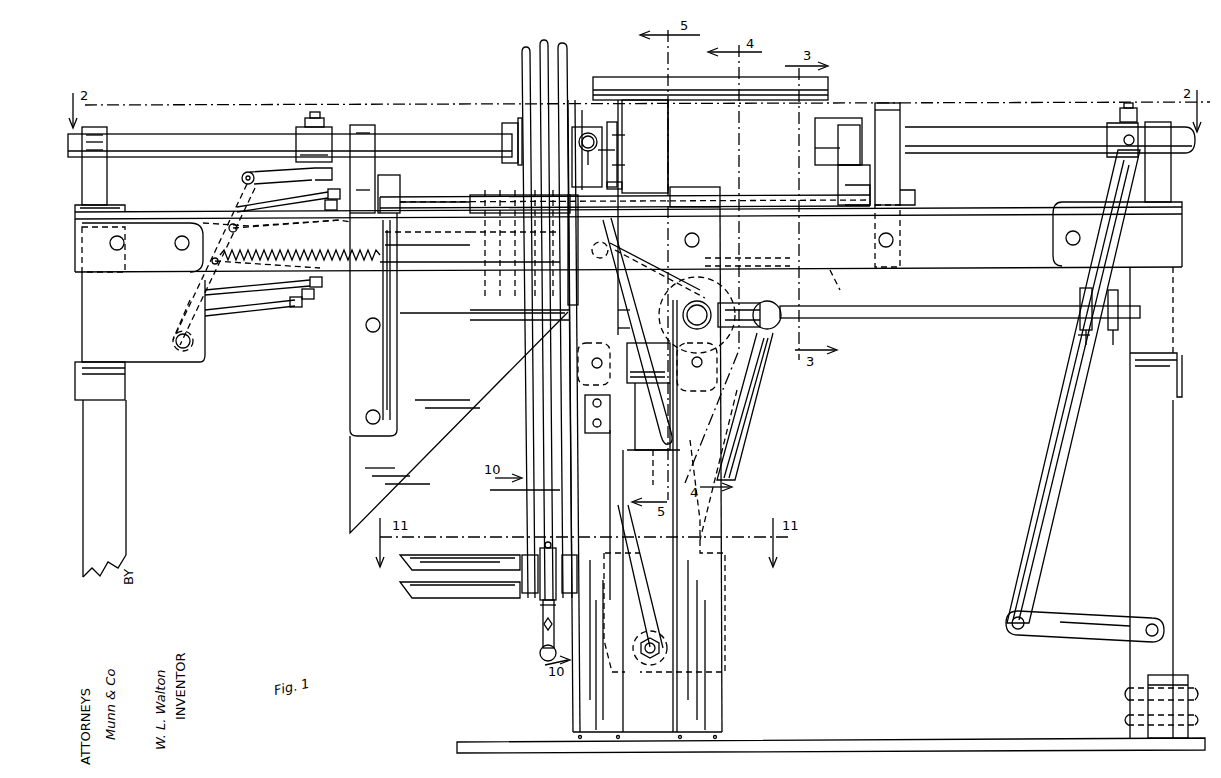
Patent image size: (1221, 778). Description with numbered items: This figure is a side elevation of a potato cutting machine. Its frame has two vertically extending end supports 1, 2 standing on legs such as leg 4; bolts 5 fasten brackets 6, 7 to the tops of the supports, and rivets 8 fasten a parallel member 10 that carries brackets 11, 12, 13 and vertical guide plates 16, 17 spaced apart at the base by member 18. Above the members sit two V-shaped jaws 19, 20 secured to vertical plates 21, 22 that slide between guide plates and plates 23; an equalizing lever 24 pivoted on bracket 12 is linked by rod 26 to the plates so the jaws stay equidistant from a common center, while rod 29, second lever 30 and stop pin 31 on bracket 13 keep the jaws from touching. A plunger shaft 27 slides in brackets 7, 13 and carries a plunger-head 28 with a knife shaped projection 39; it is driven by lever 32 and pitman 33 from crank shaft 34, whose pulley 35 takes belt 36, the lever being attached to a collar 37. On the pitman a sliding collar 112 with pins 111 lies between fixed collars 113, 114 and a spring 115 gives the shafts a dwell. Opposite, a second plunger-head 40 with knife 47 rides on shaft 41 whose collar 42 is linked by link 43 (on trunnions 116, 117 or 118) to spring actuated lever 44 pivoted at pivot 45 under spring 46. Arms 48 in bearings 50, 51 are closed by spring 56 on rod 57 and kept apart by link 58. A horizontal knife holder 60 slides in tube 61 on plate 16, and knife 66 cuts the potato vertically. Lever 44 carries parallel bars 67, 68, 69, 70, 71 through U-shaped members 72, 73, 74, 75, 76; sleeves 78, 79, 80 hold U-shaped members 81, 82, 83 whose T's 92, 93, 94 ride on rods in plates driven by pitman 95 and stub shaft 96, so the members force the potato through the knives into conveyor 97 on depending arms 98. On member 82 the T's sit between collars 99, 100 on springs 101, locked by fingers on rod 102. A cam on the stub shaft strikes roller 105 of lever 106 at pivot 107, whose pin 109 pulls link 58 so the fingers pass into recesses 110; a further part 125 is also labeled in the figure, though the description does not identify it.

The end support 1 is at (112, 458).
The end support 2 is at (1130, 487).
The leg 4 is at (1178, 680).
The bolt 5 is at (78, 258).
The bracket 6 is at (148, 232).
The bracket 7 is at (1168, 205).
The rivet 8 is at (126, 573).
The parallel member 10 is at (110, 212).
The bracket 11 is at (385, 190).
The bracket 12 is at (583, 250).
The bracket 13 is at (905, 190).
The guide plate 16 is at (588, 125).
The guide plate 17 is at (706, 196).
The member 18 is at (648, 736).
The jaw 19 is at (830, 88).
The jaw 20 is at (785, 200).
The vertical plate 21 is at (670, 134).
The vertical plate 22 is at (645, 452).
The plate 23 is at (700, 380).
The equalizing lever 24 is at (657, 265).
The rod 26 is at (655, 445).
The plunger shaft 27 is at (1000, 134).
The plunger-head 28 is at (838, 128).
The rod 29 is at (849, 185).
The lever 30 is at (887, 185).
The stop pin 31 is at (851, 195).
The lever 32 is at (1040, 470).
The pitman 33 is at (908, 306).
The crank shaft 34 is at (703, 318).
The pulley 35 is at (665, 302).
The belt 36 is at (1072, 616).
The collar 37 is at (1138, 124).
The knife shaped projection 39 is at (815, 150).
The second plunger-head 40 is at (505, 124).
The shaft 41 is at (400, 140).
The collar 42 is at (300, 142).
The link 43 is at (290, 170).
The spring actuated lever 44 is at (240, 190).
The pivot 45 is at (193, 341).
The spring 46 is at (427, 245).
The knife 47 is at (520, 118).
The arm 48 is at (628, 126).
The bearing 50 is at (747, 245).
The bearing 51 is at (585, 124).
The spring 56 is at (747, 252).
The rod 57 is at (826, 280).
The link 58 is at (627, 179).
The holder 60 is at (620, 147).
The tube 61 is at (616, 124).
The knife 66 is at (502, 220).
The parallel bar 67 is at (435, 198).
The parallel bar 68 is at (427, 220).
The parallel bar 69 is at (465, 268).
The parallel bar 70 is at (430, 321).
The parallel bar 71 is at (480, 321).
The U-shaped member 72 is at (266, 205).
The U-shaped member 73 is at (300, 247).
The U-shaped member 74 is at (266, 261).
The U-shaped member 75 is at (263, 285).
The U-shaped member 76 is at (253, 304).
The sleeve 78 is at (518, 250).
The sleeve 79 is at (532, 321).
The sleeve 80 is at (596, 241).
The U-shaped member 81 is at (521, 56).
The U-shaped member 82 is at (552, 40).
The U-shaped member 83 is at (566, 52).
The T 92 is at (524, 556).
The T 93 is at (545, 590).
The T 94 is at (578, 570).
The pitman 95 is at (738, 420).
The stub shaft 96 is at (652, 660).
The conveyor 97 is at (352, 468).
The depending arm 98 is at (355, 398).
The collar 99 is at (550, 545).
The collar 100 is at (543, 637).
The spring 101 is at (544, 606).
The rod 102 is at (540, 655).
The roller 105 is at (606, 327).
The lever 106 is at (607, 310).
The pivot 107 is at (596, 422).
The pin 109 is at (636, 161).
The recess 110 is at (284, 223).
The pin 111 is at (1080, 326).
The collar 112 is at (1080, 343).
The collar 113 is at (1080, 300).
The collar 114 is at (1118, 300).
The spring 115 is at (1112, 342).
The trunnion 116 is at (245, 174).
The trunnion 117 is at (340, 170).
The trunnion 118 is at (232, 232).
The block 125 is at (625, 372).